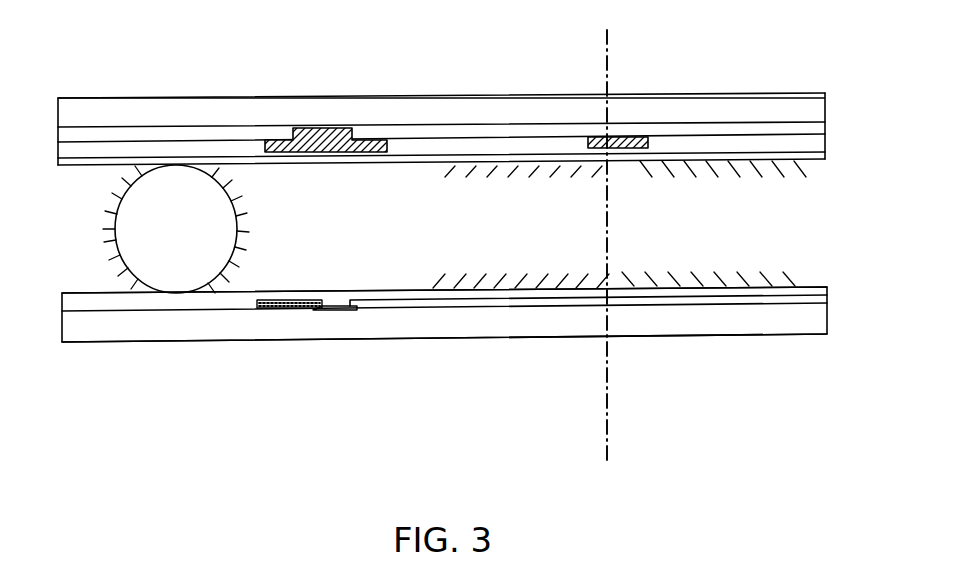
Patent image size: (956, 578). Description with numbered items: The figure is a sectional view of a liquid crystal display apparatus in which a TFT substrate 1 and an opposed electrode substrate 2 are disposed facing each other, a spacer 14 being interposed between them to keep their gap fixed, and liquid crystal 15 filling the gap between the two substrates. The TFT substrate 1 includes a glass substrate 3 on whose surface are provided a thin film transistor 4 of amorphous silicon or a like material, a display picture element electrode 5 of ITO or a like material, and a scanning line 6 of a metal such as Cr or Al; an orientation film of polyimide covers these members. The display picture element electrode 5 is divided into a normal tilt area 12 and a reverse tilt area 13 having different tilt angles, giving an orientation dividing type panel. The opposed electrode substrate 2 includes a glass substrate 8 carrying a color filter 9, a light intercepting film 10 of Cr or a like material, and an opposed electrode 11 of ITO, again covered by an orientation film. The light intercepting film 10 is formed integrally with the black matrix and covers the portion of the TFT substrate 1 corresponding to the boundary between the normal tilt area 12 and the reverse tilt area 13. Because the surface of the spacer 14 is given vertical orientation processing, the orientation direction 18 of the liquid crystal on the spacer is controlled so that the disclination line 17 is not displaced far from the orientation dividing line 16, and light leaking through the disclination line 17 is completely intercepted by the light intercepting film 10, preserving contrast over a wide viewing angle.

The TFT substrate 1 is at (152, 345).
The opposed electrode substrate 2 is at (170, 97).
The glass substrate 3 is at (648, 322).
The thin film transistor 4 is at (332, 312).
The display picture element electrode 5 is at (802, 298).
The scanning line 6 is at (285, 312).
The glass substrate 8 is at (358, 105).
The color filter 9 is at (718, 128).
The light intercepting film 10 is at (310, 128).
The opposed electrode 11 is at (767, 145).
The normal tilt area 12 is at (485, 290).
The reverse tilt area 13 is at (715, 273).
The spacer 14 is at (142, 223).
The liquid crystal 15 is at (748, 230).
The orientation dividing line 16 is at (615, 440).
The disclination line 17 is at (652, 475).
The orientation direction 18 is at (240, 213).